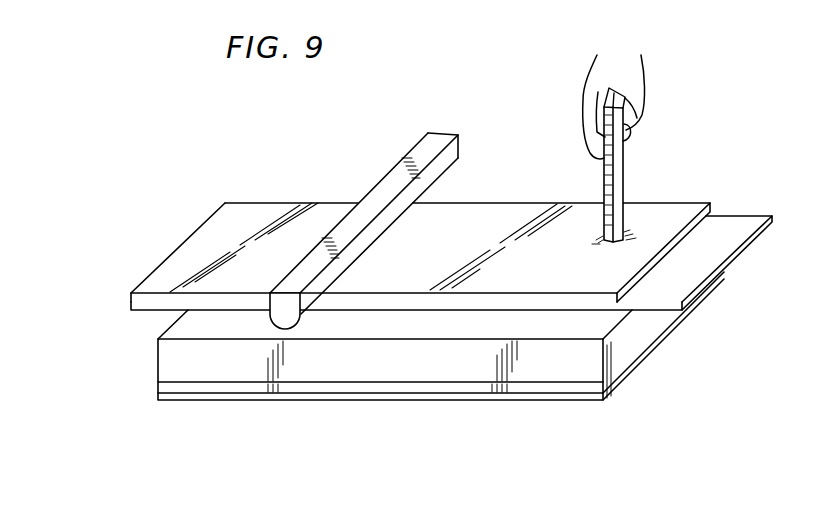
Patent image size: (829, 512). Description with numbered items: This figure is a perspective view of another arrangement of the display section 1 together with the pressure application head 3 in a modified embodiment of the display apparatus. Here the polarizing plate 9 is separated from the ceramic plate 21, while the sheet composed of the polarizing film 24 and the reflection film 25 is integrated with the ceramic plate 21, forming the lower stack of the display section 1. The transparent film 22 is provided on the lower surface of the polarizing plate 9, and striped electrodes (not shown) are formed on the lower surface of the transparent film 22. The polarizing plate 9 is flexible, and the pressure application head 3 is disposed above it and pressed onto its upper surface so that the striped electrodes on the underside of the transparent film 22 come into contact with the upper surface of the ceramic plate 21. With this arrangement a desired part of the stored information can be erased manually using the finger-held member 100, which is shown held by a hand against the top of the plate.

The display section 1 is at (112, 288).
The pressure application head 3 is at (400, 166).
The polarizing plate 9 is at (493, 217).
The ceramic plate 21 is at (552, 365).
The transparent film 22 is at (708, 257).
The polarizing film 24 is at (328, 388).
The reflection film 25 is at (430, 398).
The finger-held member 100 is at (620, 173).